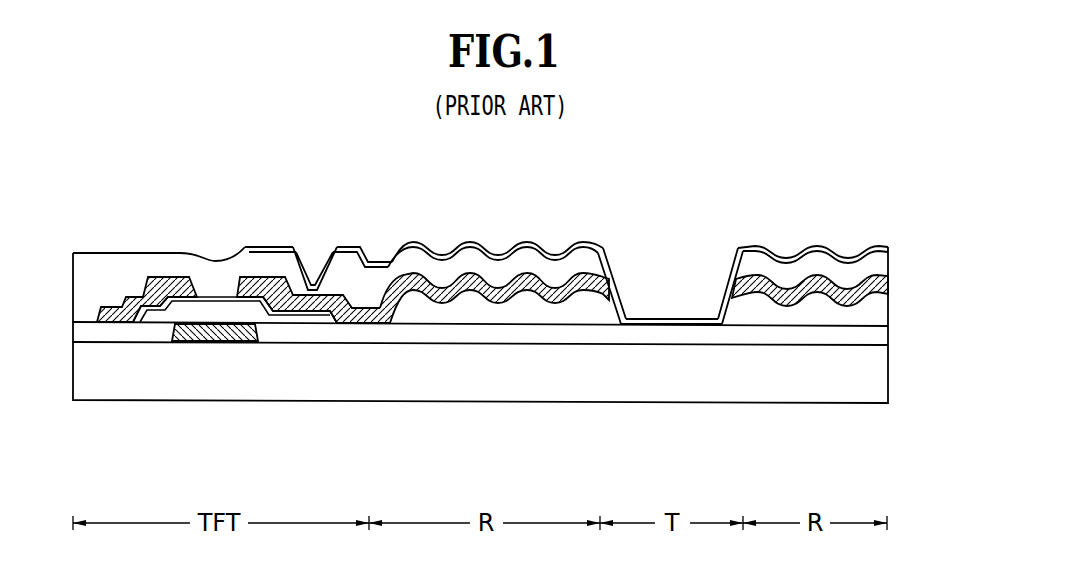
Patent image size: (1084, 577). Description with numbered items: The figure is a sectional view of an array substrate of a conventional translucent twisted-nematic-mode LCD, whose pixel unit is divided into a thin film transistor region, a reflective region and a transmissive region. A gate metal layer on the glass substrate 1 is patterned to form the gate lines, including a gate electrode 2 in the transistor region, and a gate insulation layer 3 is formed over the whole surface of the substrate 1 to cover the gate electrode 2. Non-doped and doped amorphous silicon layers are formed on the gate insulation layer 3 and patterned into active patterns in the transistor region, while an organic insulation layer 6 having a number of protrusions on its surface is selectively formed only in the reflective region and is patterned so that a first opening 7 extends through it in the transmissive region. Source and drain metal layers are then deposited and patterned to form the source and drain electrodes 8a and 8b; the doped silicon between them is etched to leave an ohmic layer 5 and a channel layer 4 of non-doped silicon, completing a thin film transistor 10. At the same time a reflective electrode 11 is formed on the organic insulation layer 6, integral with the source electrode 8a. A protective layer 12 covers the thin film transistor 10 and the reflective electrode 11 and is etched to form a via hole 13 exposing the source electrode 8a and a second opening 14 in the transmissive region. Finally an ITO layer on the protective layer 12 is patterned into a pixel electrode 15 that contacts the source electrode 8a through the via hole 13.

The glass substrate 1 is at (882, 373).
The gate electrode 2 is at (213, 330).
The gate insulation layer 3 is at (277, 336).
The channel layer 4 is at (170, 323).
The ohmic layer 5 is at (144, 325).
The organic insulation layer 6 is at (436, 313).
The first opening 7 is at (617, 311).
The source electrode 8a is at (313, 300).
The drain electrode 8b is at (113, 323).
The TFT 10 is at (335, 458).
The reflective electrode 11 is at (488, 292).
The protective layer 12 is at (882, 262).
The via hole 13 is at (313, 265).
The second opening 14 is at (697, 273).
The pixel electrode 15 is at (657, 322).